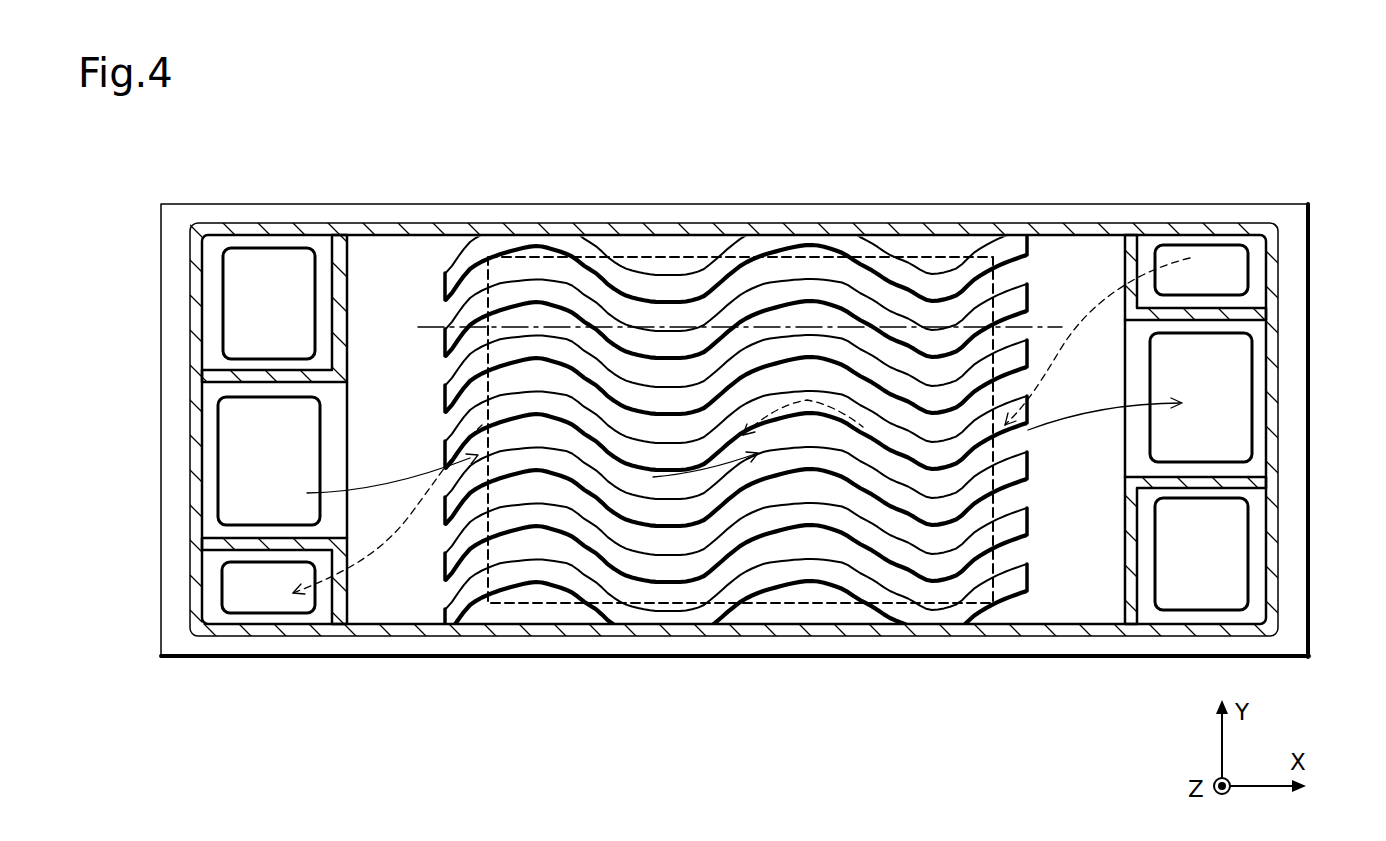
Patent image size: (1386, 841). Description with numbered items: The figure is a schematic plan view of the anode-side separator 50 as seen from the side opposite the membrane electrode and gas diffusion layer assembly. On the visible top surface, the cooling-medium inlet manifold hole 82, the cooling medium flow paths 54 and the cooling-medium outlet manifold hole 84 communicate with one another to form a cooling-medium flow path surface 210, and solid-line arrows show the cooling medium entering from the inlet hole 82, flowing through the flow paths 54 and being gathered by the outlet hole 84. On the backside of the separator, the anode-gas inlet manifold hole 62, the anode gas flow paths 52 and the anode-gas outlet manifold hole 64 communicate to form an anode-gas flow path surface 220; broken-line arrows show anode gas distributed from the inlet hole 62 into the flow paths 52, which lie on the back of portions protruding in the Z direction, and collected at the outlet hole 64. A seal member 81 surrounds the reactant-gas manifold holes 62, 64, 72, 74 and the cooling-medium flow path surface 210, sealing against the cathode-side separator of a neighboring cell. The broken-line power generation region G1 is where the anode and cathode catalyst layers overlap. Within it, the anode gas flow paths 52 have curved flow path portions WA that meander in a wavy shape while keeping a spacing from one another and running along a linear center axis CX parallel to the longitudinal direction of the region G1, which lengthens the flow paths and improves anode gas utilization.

The anode-side separator 50 is at (1257, 203).
The seal member 81 is at (1070, 225).
The reactant-gas manifold hole 74 is at (258, 270).
The cooling-medium inlet manifold hole 82 is at (262, 474).
The anode-gas outlet manifold hole 64 is at (255, 600).
The anode-gas inlet manifold hole 62 is at (1205, 258).
The cooling-medium outlet manifold hole 84 is at (1215, 392).
The reactant-gas manifold hole 72 is at (1222, 557).
The cooling medium flow paths 54 is at (510, 290).
The anode gas flow paths 52 is at (532, 290).
The curved flow path portions WA is at (740, 302).
The power generation region G1 is at (808, 606).
The linear center axis CX is at (720, 327).
The cooling-medium flow path surface 210 is at (913, 247).
The anode-gas flow path surface 220 is at (972, 245).